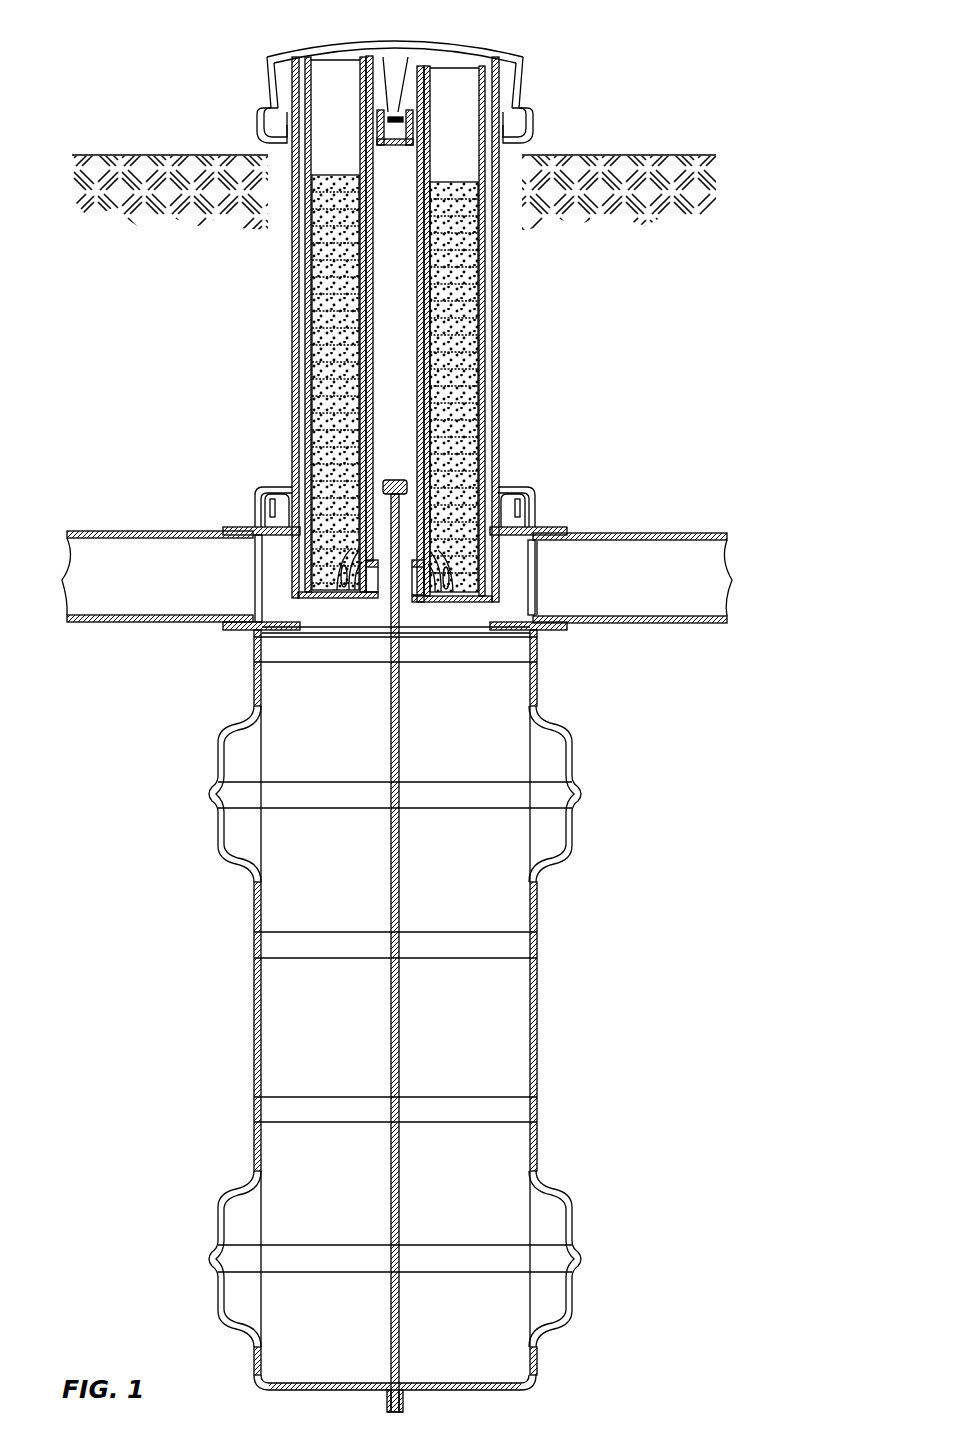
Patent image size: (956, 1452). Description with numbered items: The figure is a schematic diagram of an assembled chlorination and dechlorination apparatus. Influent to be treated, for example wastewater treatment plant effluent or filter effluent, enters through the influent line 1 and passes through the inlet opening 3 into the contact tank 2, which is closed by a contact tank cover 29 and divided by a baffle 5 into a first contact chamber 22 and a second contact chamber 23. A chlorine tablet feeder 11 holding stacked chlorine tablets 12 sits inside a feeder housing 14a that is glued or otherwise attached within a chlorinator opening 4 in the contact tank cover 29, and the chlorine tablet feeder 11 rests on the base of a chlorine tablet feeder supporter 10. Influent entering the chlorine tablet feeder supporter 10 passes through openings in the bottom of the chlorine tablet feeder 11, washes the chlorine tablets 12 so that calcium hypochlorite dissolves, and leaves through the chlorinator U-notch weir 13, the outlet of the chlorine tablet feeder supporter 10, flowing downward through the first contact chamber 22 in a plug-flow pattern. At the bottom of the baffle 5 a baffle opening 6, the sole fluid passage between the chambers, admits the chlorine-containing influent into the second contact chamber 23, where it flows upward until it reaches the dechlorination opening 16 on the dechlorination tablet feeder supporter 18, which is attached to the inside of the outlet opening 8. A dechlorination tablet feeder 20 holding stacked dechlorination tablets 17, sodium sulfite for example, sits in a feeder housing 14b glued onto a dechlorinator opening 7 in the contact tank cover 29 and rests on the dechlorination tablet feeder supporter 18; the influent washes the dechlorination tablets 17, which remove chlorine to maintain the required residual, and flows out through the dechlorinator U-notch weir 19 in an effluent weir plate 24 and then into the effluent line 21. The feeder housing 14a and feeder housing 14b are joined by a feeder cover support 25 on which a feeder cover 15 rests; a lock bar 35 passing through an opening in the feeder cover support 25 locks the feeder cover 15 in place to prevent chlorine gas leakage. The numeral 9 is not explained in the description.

The influent line 1 is at (130, 577).
The contact tank 2 is at (253, 1110).
The inlet opening 3 is at (262, 504).
The chlorinator opening 4 is at (284, 484).
The baffle 5 is at (400, 1196).
The baffle opening 6 is at (400, 1348).
The dechlorinator opening 7 is at (515, 487).
The outlet opening 8 is at (535, 648).
The expansion bulge 9 is at (578, 798).
The chlorine tablet feeder supporter 10 is at (290, 590).
The chlorine tablet feeder 11 is at (308, 326).
The chlorine tablets 12 is at (335, 382).
The chlorinator U-notch weir 13 is at (388, 582).
The feeder housing 14a is at (292, 290).
The feeder housing 14b is at (500, 292).
The feeder cover 15 is at (393, 42).
The dechlorination opening 16 is at (404, 585).
The dechlorination tablets 17 is at (440, 383).
The dechlorination tablet feeder supporter 18 is at (498, 577).
The dechlorinator U-notch weir 19 is at (535, 580).
The dechlorination tablet feeder 20 is at (483, 333).
The effluent line 21 is at (695, 575).
The first contact chamber 22 is at (299, 1035).
The second contact chamber 23 is at (490, 1035).
The effluent weir plate 24 is at (535, 597).
The feeder cover support 25 is at (272, 124).
The contact tank cover 29 is at (545, 496).
The lock bar 35 is at (398, 116).